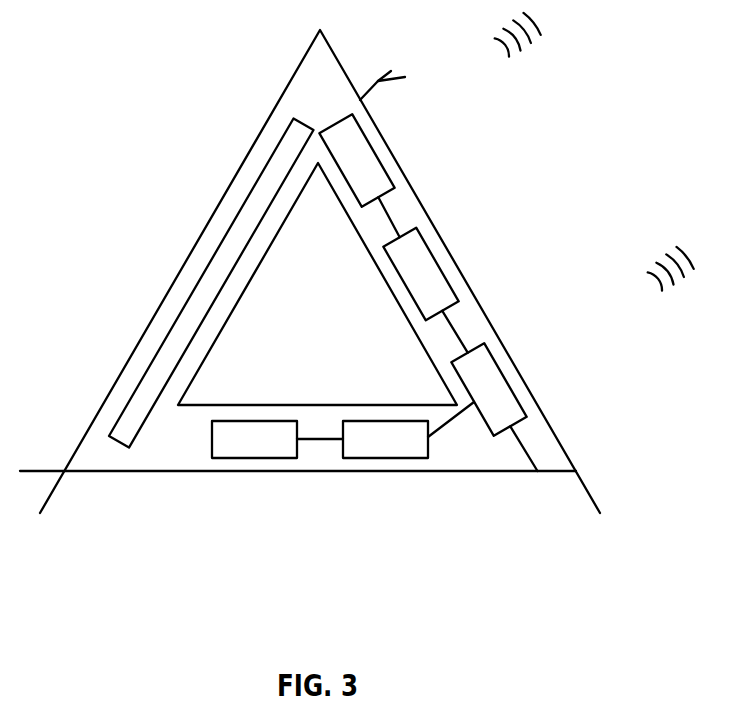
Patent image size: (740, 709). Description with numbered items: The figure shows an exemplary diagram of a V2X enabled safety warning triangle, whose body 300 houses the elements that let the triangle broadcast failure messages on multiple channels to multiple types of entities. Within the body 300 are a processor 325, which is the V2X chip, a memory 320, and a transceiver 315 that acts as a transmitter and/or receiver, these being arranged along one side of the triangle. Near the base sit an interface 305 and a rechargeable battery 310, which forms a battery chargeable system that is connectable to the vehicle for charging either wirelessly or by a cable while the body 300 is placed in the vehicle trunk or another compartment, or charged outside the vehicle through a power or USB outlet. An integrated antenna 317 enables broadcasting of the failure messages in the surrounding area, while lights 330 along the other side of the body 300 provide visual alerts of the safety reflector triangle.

The body 300 is at (343, 63).
The interface 305 is at (233, 458).
The rechargeable battery 310 is at (385, 458).
The transceiver 315 is at (492, 383).
The antenna 317 is at (587, 490).
The memory 320 is at (427, 272).
The processor 325 is at (360, 158).
The lights 330 is at (218, 277).